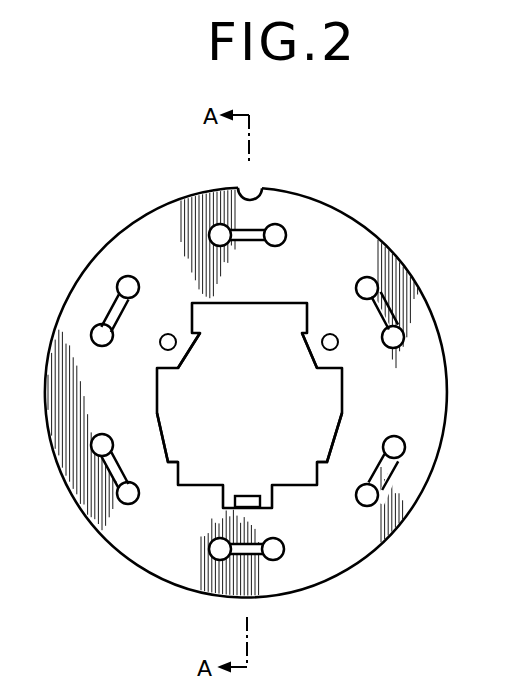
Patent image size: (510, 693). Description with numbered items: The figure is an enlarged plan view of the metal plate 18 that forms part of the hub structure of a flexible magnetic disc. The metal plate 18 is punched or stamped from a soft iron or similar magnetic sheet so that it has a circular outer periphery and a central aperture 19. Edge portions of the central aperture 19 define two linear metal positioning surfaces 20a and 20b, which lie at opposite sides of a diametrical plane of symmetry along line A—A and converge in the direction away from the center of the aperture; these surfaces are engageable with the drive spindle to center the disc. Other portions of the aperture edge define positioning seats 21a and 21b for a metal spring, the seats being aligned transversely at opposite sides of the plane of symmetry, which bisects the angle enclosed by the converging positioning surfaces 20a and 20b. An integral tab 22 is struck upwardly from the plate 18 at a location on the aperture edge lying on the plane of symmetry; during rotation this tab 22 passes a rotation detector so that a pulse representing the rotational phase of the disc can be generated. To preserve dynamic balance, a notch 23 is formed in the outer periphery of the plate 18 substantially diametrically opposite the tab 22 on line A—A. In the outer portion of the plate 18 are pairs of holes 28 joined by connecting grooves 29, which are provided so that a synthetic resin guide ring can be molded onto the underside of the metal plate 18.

The metal plate 18 is at (432, 378).
The central aperture 19 is at (278, 303).
The metal positioning surface 20a is at (192, 352).
The metal positioning surface 20b is at (298, 351).
The positioning seat 21a is at (176, 462).
The positioning seat 21b is at (323, 462).
The integral tab 22 is at (250, 496).
The notch 23 is at (263, 191).
The holes 28 is at (396, 335).
The connecting grooves 29 is at (116, 481).